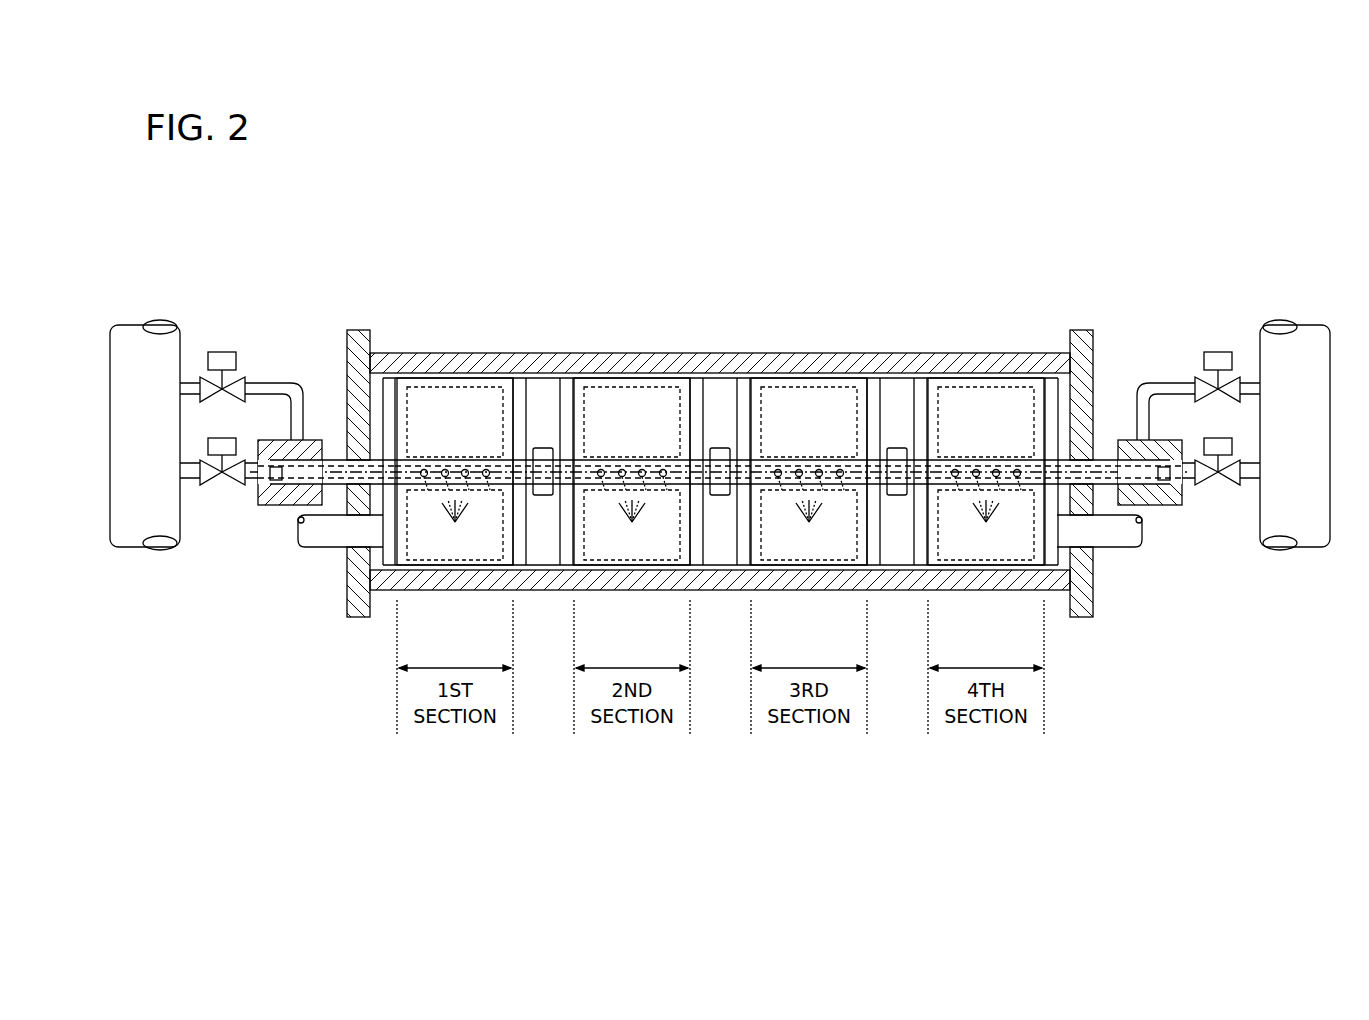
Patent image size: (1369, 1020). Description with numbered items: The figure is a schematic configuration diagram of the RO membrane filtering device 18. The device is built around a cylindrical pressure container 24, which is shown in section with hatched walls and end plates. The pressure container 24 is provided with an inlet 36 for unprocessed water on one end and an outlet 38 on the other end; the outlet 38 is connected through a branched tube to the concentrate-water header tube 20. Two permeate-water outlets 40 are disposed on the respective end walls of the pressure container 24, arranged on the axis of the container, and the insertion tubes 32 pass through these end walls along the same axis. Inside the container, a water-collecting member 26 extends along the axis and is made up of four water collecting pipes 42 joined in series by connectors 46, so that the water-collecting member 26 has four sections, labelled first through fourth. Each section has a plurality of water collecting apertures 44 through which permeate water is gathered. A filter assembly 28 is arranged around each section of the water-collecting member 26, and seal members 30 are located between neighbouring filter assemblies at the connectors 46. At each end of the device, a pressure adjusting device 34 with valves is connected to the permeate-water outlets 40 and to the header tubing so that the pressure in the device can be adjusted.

The RO membrane filtering device 18 is at (1068, 237).
The concentrate-water header tube 20 is at (125, 325).
The pressure container 24 is at (773, 352).
The water-collecting member 26 is at (821, 459).
The filter assembly 28 is at (458, 378).
The seal member 30 is at (542, 448).
The insertion tube 32 is at (340, 457).
The pressure adjusting device 34 is at (1216, 317).
The inlet 36 is at (338, 547).
The outlet 38 is at (1102, 547).
The permeate-water outlet 40 is at (300, 504).
The water collecting pipe 42 is at (447, 458).
The water collecting aperture 44 is at (720, 524).
The connector 46 is at (542, 495).